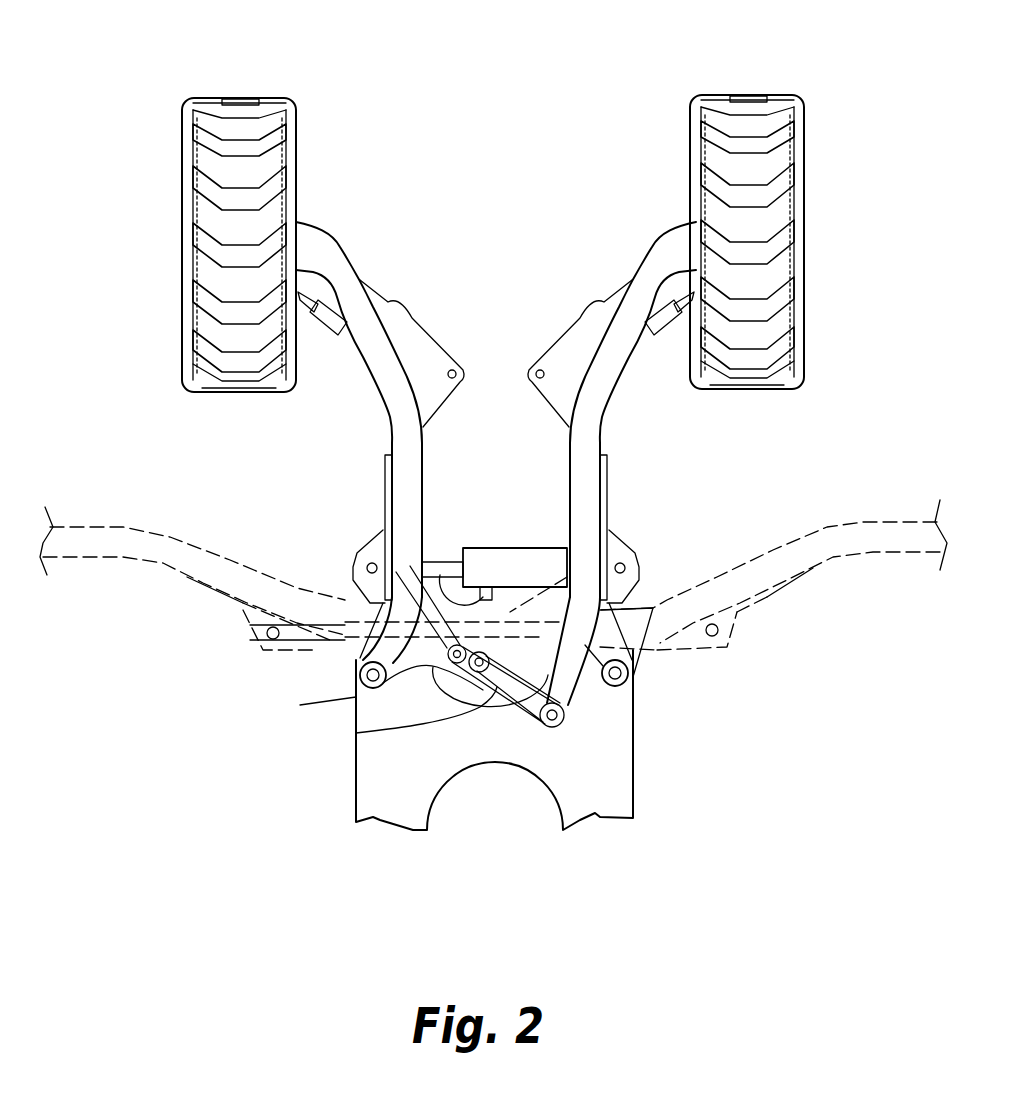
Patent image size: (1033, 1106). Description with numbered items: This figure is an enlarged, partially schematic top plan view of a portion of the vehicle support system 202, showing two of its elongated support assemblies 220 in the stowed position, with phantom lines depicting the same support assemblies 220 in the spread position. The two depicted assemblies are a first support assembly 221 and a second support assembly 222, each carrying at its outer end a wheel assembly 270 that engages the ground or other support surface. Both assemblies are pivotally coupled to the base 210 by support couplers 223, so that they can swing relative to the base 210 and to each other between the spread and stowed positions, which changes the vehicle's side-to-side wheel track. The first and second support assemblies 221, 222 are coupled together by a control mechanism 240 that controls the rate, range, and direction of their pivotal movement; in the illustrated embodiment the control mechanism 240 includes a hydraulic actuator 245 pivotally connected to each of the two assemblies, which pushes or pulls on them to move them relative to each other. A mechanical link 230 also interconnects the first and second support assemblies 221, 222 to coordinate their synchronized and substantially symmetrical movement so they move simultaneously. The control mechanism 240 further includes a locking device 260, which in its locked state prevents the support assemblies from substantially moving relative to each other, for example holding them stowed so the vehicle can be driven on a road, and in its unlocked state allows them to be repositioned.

The vehicle support system 202 is at (464, 72).
The base 210 is at (633, 765).
The support assemblies 220 is at (529, 300).
The first support assembly 221 is at (390, 463).
The second support assembly 222 is at (605, 473).
The support couplers 223 is at (353, 697).
The mechanical link 230 is at (480, 707).
The control mechanism 240 is at (497, 548).
The hydraulic actuator 245 is at (532, 560).
The locking device 260 is at (455, 597).
The wheel assembly 270 is at (182, 337).